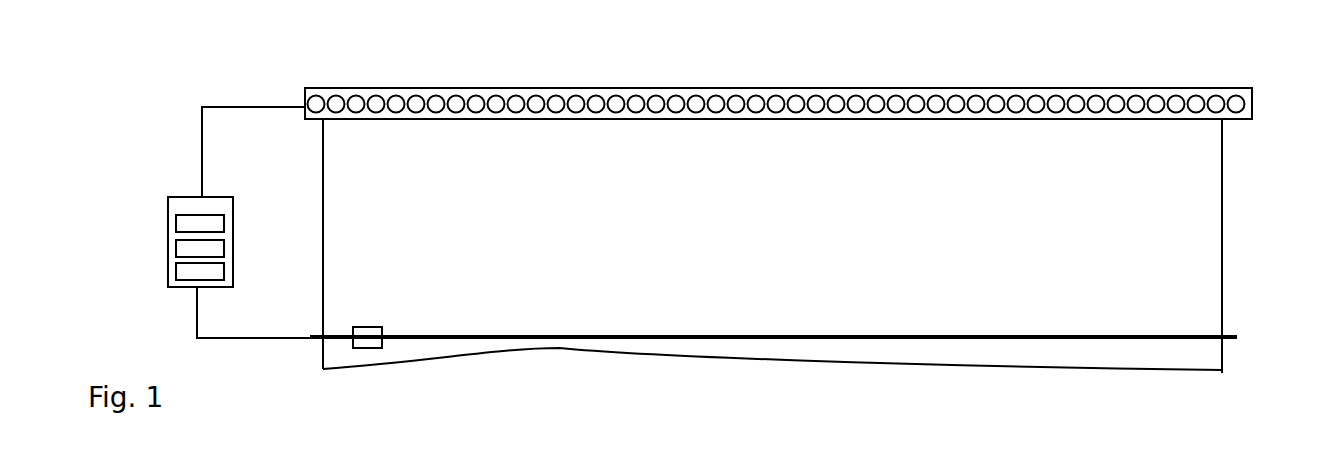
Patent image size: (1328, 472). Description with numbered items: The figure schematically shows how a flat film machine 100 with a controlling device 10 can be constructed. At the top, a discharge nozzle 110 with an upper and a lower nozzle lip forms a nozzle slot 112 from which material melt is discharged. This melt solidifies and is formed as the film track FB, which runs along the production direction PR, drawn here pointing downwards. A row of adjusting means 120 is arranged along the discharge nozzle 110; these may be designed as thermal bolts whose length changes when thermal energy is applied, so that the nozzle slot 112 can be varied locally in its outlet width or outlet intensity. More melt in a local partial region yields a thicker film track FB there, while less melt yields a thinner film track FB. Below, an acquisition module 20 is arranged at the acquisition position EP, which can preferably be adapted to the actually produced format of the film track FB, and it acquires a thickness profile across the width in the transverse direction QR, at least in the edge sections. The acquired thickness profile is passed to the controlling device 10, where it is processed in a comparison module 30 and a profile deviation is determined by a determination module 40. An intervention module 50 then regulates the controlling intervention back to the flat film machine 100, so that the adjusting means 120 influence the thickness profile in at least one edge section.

The flat film machine 100 is at (237, 63).
The discharge nozzle 110 is at (1253, 119).
The nozzle slot 112 is at (1222, 120).
The adjusting means 120 is at (1217, 97).
The controlling device 10 is at (183, 200).
The acquisition module 20 is at (364, 342).
The comparison module 30 is at (218, 270).
The determination module 40 is at (220, 247).
The intervention module 50 is at (222, 223).
The film track FB is at (1205, 289).
The acquisition position EP is at (373, 355).
The production direction PR is at (738, 360).
The transverse direction QR is at (838, 63).